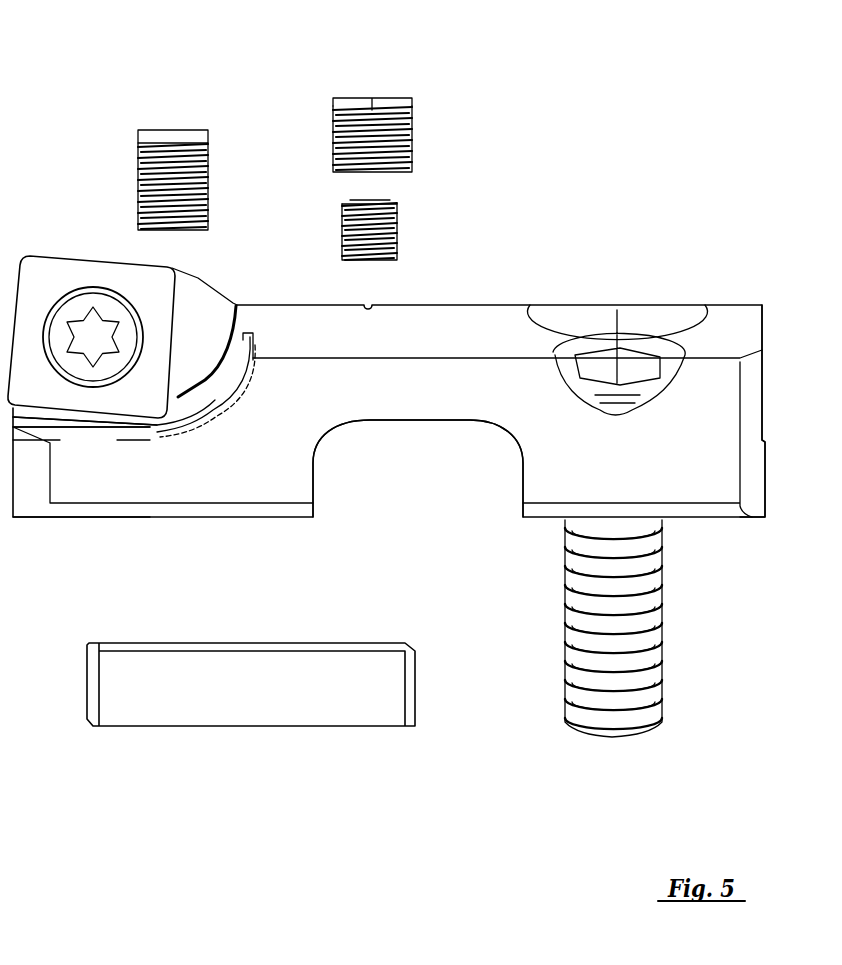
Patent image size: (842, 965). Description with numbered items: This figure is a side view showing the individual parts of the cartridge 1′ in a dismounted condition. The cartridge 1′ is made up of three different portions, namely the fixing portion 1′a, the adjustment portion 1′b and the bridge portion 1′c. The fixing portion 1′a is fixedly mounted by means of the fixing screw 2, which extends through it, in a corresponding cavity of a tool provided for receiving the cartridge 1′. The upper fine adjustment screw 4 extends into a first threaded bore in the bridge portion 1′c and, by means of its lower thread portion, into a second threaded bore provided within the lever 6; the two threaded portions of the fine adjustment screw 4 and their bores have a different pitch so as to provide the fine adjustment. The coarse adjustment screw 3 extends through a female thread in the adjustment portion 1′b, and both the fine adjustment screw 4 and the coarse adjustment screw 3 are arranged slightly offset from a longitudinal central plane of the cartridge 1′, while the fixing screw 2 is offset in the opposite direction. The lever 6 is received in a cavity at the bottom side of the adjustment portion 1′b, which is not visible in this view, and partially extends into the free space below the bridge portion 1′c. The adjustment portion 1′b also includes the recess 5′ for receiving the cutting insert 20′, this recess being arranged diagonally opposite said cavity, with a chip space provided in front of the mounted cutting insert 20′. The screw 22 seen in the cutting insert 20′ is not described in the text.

The cartridge 1′ is at (503, 270).
The fixing portion 1′a is at (720, 408).
The adjustment portion 1′b is at (153, 483).
The bridge portion 1′c is at (442, 392).
The fixing screw 2 is at (648, 585).
The coarse adjustment screw 3 is at (193, 131).
The fine adjustment screw 4 is at (398, 100).
The recess 5′ is at (237, 305).
The lever 6 is at (358, 642).
The cutting insert 20′ is at (59, 273).
The insert clamping screw 22 is at (120, 314).